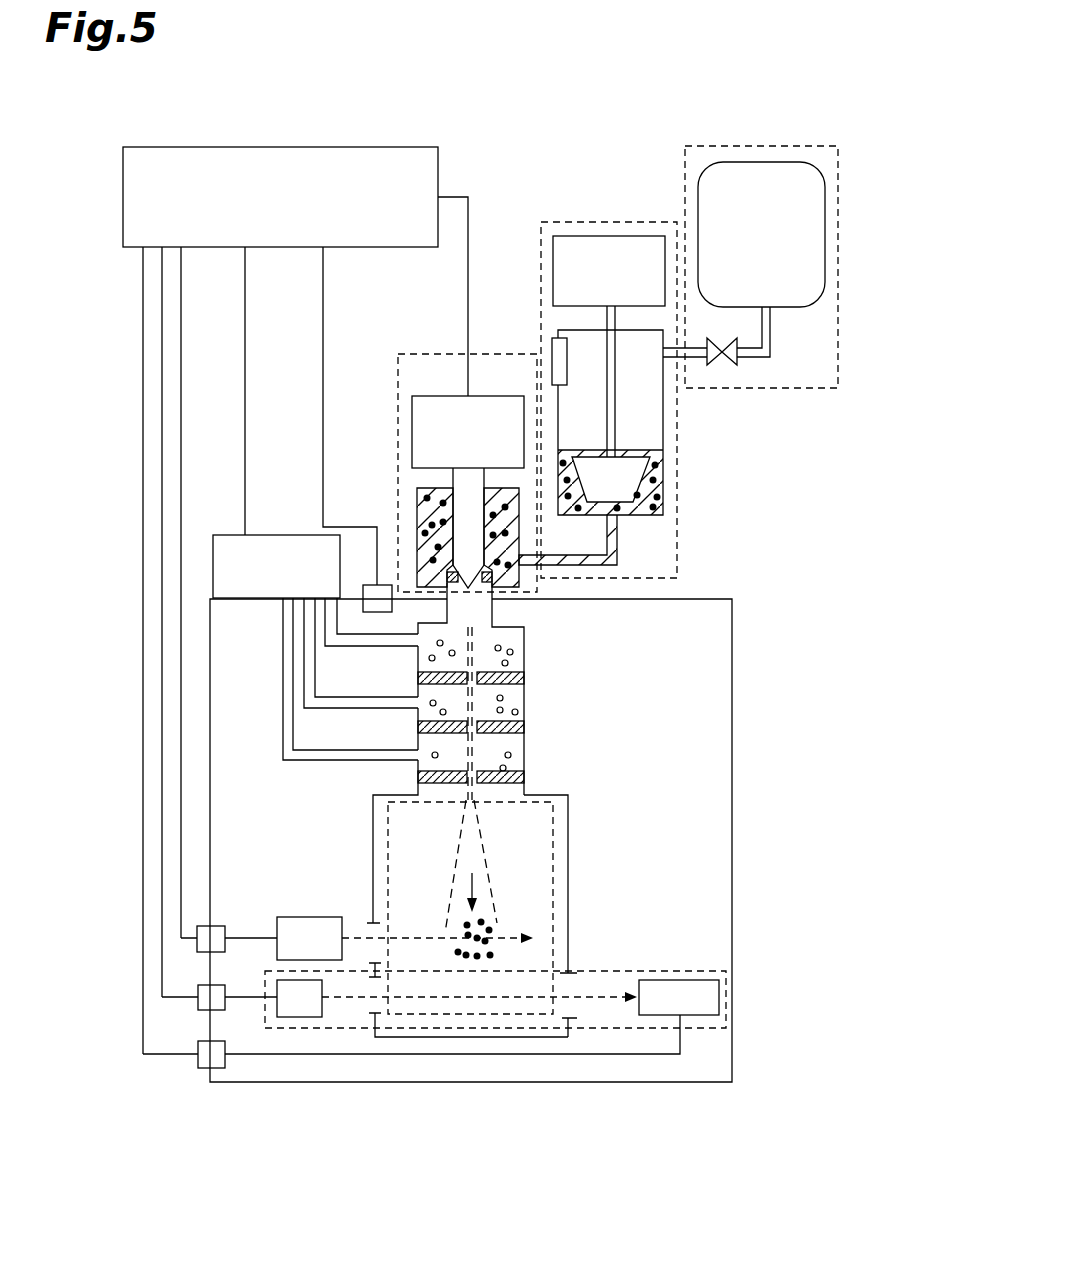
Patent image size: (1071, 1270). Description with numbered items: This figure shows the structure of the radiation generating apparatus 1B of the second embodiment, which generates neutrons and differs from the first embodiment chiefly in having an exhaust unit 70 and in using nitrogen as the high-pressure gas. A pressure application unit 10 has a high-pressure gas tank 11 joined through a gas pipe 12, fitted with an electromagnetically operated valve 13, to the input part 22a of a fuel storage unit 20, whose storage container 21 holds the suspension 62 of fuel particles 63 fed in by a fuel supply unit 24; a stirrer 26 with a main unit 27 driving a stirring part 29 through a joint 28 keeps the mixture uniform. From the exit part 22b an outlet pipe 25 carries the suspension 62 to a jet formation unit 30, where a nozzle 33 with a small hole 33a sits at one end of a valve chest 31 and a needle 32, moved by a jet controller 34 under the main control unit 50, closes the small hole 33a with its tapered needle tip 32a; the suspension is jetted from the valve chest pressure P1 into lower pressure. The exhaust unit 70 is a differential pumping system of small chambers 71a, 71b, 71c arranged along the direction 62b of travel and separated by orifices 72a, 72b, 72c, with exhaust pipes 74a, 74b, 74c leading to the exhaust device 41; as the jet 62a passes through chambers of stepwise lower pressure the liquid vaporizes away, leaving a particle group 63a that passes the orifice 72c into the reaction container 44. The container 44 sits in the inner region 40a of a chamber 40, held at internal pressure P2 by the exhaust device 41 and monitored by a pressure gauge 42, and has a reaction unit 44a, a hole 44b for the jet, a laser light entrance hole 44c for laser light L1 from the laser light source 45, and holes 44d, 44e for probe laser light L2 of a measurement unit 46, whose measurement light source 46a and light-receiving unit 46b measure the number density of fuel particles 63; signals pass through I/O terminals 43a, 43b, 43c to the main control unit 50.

The radiation generating apparatus 1B is at (722, 60).
The pressure application unit 10 is at (838, 195).
The high-pressure gas tank 11 is at (825, 248).
The gas pipe 12 is at (770, 328).
The valve 13 is at (735, 365).
The fuel storage unit 20 is at (632, 222).
The storage container 21 is at (670, 430).
The input part 22a is at (663, 352).
The exit part 22b is at (617, 540).
The fuel supply unit 24 is at (552, 350).
The outlet pipe 25 is at (612, 560).
The stirrer 26 is at (609, 230).
The main unit 27 is at (573, 247).
The joint 28 is at (606, 315).
The stirring part 29 is at (640, 470).
The jet formation unit 30 is at (418, 354).
The valve chest 31 is at (417, 510).
The needle 32 is at (452, 478).
The needle tip 32a is at (470, 628).
The nozzle 33 is at (440, 578).
The small hole 33a is at (468, 590).
The jet controller 34 is at (412, 417).
The chamber 40 is at (732, 692).
The inner region 40a is at (713, 633).
The exhaust device 41 is at (228, 535).
The pressure gauge 42 is at (367, 585).
The I/O terminal 43a is at (214, 926).
The I/O terminal 43b is at (198, 1002).
The I/O terminal 43c is at (211, 1068).
The reaction container 44 is at (568, 853).
The reaction unit 44a is at (553, 872).
The hole 44b is at (525, 796).
The laser light entrance hole 44c is at (370, 926).
The hole 44d is at (363, 1013).
The hole 44e is at (570, 1012).
The laser light source 45 is at (288, 917).
The measurement unit 46 is at (667, 970).
The measurement light source 46a is at (293, 1017).
The light-receiving unit 46b is at (719, 1003).
The main control unit 50 is at (363, 147).
The suspension 62 is at (655, 455).
The jet 62a is at (460, 865).
The direction 62b is at (475, 885).
The fuel particles 63 is at (657, 505).
The particle group 63a is at (508, 912).
The exhaust unit 70 is at (545, 695).
The small chamber 71a is at (515, 658).
The small chamber 71b is at (515, 702).
The small chamber 71c is at (515, 748).
The orifice 72a is at (418, 676).
The orifice 72b is at (418, 728).
The orifice 72c is at (418, 778).
The exhaust pipe 74a is at (342, 646).
The exhaust pipe 74b is at (327, 708).
The exhaust pipe 74c is at (318, 760).
The valve chest pressure P1 is at (420, 492).
The internal pressure P2 is at (258, 641).
The laser light L1 is at (425, 938).
The probe laser light L2 is at (338, 1000).